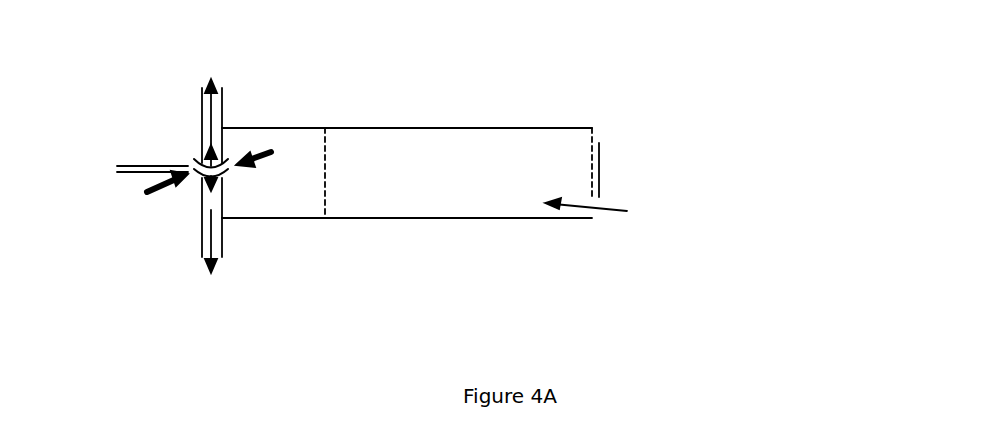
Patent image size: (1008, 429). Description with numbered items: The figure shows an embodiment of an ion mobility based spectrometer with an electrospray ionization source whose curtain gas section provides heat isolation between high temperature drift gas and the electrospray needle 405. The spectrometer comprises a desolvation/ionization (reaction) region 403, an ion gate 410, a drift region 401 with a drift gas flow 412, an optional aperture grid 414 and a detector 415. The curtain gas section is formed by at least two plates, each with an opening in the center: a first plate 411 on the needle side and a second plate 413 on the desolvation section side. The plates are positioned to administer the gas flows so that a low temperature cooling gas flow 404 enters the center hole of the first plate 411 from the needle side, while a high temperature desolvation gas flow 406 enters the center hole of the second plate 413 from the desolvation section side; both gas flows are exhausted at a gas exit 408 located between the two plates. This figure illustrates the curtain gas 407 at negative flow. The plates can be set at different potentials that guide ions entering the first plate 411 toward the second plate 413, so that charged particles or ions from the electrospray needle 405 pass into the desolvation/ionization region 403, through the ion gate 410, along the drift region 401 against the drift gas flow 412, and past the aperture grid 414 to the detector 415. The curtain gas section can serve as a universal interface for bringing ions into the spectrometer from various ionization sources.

The drift region 401 is at (407, 173).
The desolvation/ionization (reaction) region 403 is at (264, 170).
The low temperature cooling gas flow 404 is at (143, 192).
The electrospray needle 405 is at (150, 165).
The high temperature desolvation gas flow 406 is at (272, 152).
The curtain gas 407 is at (222, 108).
The gas exit 408 is at (204, 80).
The ion gate 410 is at (326, 163).
The first plate 411 is at (201, 138).
The drift gas flow 412 is at (605, 211).
The second plate 413 is at (222, 201).
The aperture grid 414 is at (593, 140).
The detector 415 is at (600, 158).